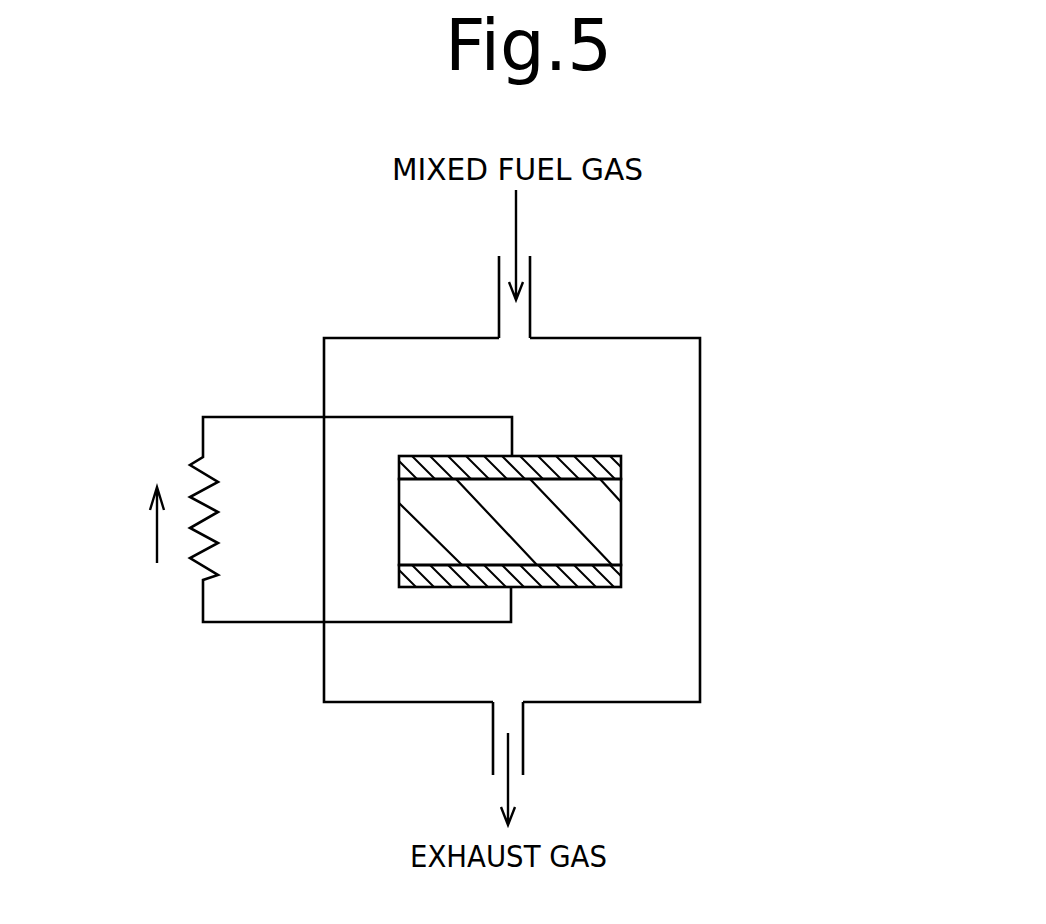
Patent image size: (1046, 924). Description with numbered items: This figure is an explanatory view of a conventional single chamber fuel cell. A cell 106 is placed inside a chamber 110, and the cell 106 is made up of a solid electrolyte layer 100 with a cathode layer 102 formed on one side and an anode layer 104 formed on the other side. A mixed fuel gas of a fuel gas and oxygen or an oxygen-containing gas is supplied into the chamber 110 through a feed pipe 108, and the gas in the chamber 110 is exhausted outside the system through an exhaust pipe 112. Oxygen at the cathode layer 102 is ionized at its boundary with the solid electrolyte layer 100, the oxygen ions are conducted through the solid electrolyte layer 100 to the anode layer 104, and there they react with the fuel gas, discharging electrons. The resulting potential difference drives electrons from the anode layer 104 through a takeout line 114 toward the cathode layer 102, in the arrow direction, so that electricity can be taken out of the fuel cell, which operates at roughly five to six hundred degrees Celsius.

The solid electrolyte layer 100 is at (621, 527).
The cathode layer 102 is at (621, 464).
The anode layer 104 is at (585, 585).
The cell 106 is at (633, 527).
The feed pipe 108 is at (497, 303).
The chamber 110 is at (680, 338).
The exhaust pipe 112 is at (492, 758).
The takeout line 114 is at (220, 416).